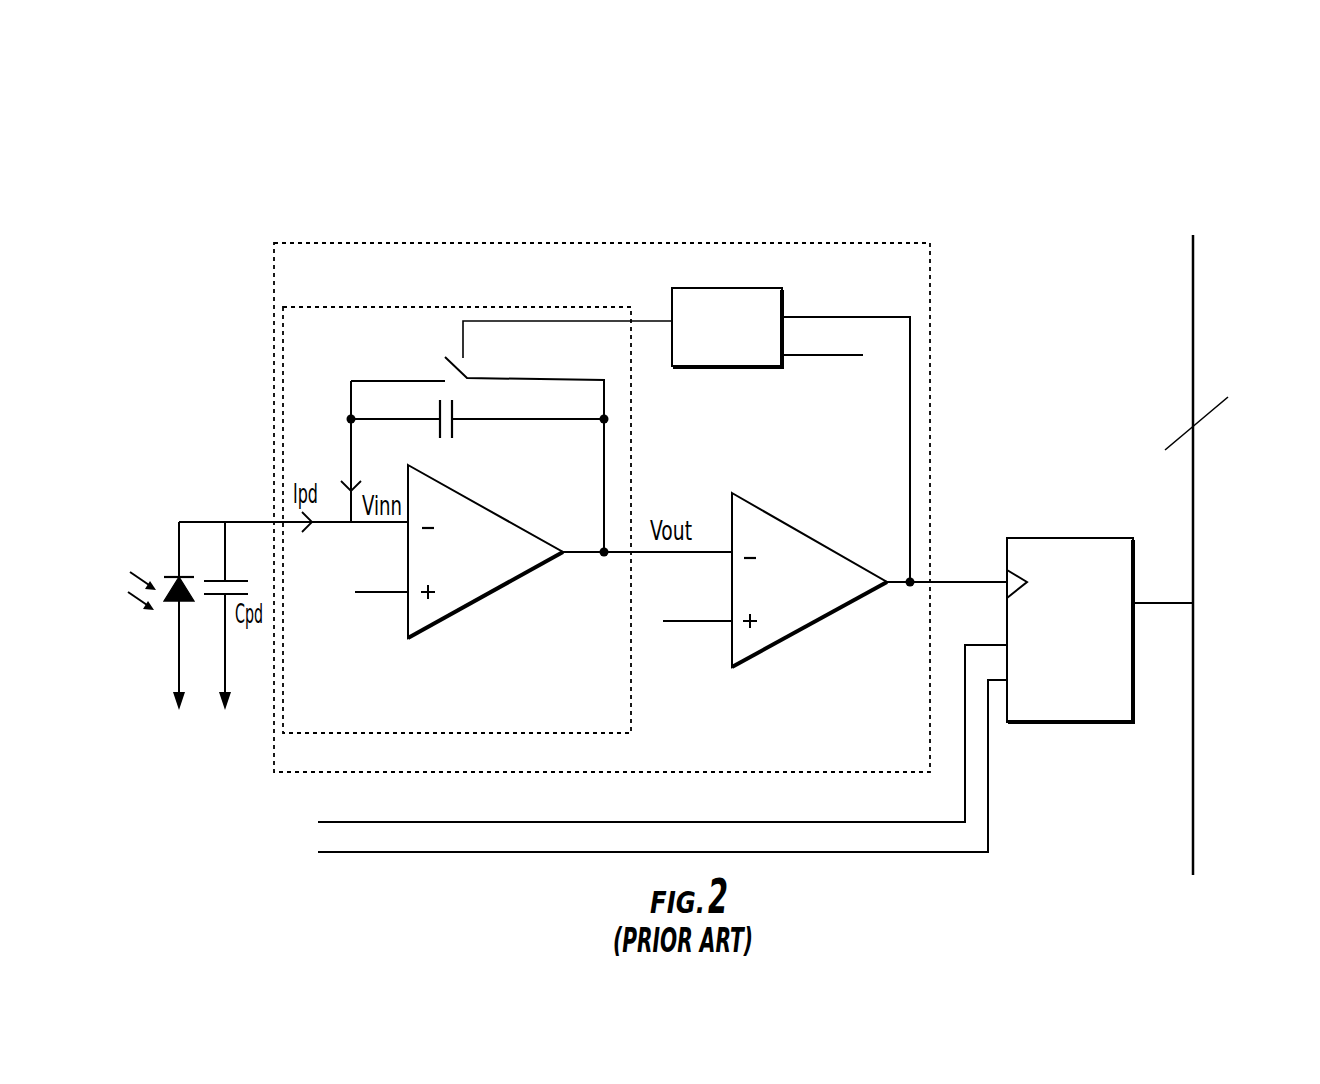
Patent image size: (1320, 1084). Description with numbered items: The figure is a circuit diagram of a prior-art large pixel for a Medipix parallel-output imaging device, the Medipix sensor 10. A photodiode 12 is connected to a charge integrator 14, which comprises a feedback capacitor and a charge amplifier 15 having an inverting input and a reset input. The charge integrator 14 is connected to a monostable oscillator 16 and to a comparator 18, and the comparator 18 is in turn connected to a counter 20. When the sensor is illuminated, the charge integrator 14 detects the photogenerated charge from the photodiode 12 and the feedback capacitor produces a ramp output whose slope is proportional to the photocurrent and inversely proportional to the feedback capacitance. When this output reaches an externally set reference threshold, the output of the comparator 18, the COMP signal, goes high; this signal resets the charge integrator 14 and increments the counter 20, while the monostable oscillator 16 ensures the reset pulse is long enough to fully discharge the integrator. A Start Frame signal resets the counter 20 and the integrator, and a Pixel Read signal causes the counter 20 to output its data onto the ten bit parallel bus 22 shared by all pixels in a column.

The Medipix sensor 10 is at (962, 150).
The photodiode 12 is at (158, 616).
The charge integrator 14 is at (477, 499).
The charge amplifier 15 is at (455, 551).
The monostable oscillator 16 is at (791, 419).
The comparator 18 is at (835, 580).
The counter 20 is at (741, 682).
The parallel bus 22 is at (1229, 531).